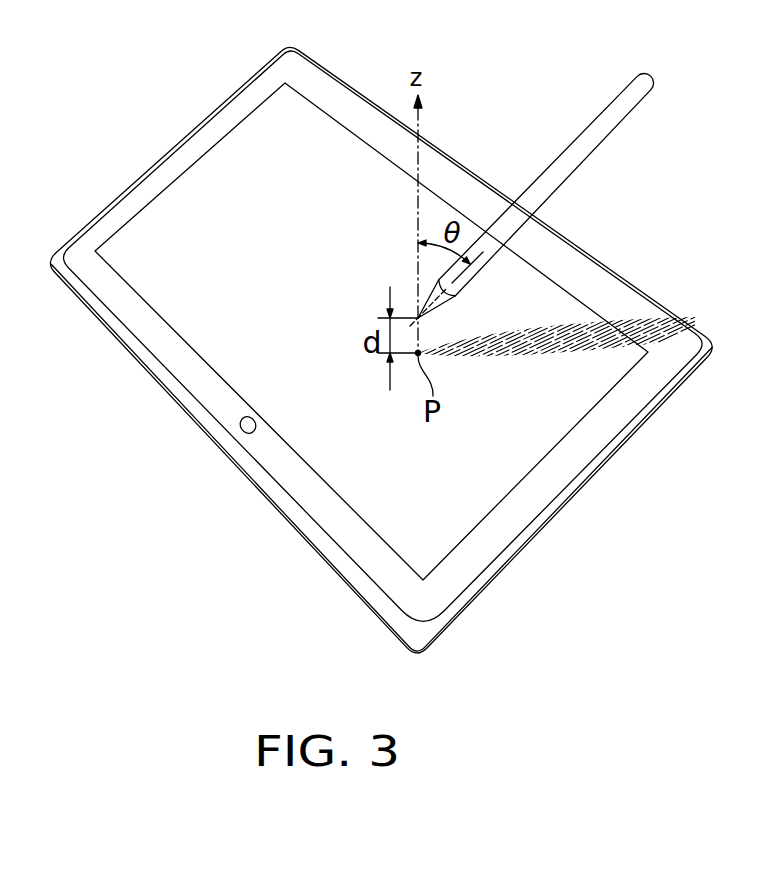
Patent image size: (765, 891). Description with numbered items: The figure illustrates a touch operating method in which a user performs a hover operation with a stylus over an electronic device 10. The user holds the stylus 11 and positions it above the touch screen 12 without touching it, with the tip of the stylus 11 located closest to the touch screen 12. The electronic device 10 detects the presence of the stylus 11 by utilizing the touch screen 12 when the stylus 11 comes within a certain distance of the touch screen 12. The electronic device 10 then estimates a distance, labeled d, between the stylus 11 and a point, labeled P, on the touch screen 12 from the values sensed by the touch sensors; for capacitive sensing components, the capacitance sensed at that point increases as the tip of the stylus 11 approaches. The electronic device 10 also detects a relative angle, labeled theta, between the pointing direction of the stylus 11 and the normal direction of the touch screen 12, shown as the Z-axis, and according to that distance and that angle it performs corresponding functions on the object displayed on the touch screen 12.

The electronic device 10 is at (617, 428).
The stylus 11 is at (581, 155).
The touch screen 12 is at (505, 472).